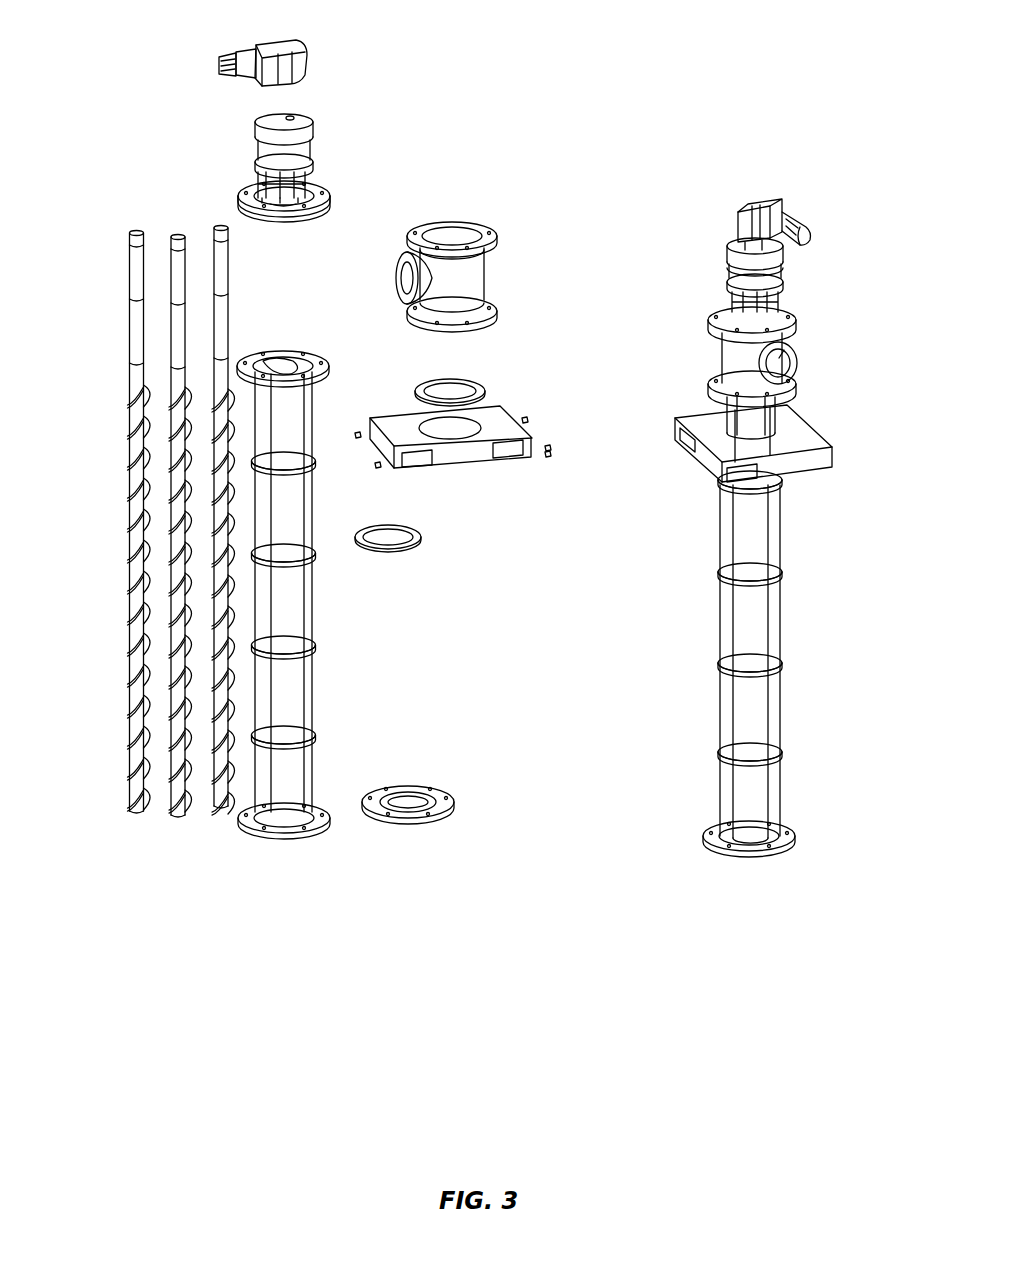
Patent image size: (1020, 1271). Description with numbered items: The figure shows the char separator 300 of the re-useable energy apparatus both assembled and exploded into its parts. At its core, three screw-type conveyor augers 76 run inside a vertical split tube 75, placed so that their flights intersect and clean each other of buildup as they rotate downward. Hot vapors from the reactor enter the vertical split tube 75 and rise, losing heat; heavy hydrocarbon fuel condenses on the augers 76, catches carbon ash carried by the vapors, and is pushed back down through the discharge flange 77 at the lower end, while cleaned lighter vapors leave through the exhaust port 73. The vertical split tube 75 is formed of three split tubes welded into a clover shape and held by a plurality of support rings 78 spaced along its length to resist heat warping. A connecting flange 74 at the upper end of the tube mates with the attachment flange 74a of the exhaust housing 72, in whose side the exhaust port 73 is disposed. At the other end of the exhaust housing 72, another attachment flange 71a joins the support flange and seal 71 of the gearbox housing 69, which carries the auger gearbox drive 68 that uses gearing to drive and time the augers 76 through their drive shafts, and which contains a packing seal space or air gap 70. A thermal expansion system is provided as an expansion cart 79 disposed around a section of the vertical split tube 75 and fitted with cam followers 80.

The char separator 300 is at (763, 163).
The auger gearbox drive 68 is at (307, 56).
The gearbox housing 69 is at (312, 137).
The packing seal space or air gap 70 is at (256, 172).
The support flange and seal 71 is at (328, 190).
The attachment flange 71a is at (478, 230).
The exhaust housing 72 is at (488, 275).
The exhaust port 73 is at (396, 268).
The connecting flange 74 is at (300, 360).
The attachment flange 74a is at (420, 322).
The vertical split tube 75 is at (300, 680).
The screw-type conveyor augers 76 is at (222, 304).
The discharge flange 77 is at (318, 826).
The support rings 78 is at (478, 382).
The expansion cart 79 is at (457, 458).
The cam followers 80 is at (555, 457).